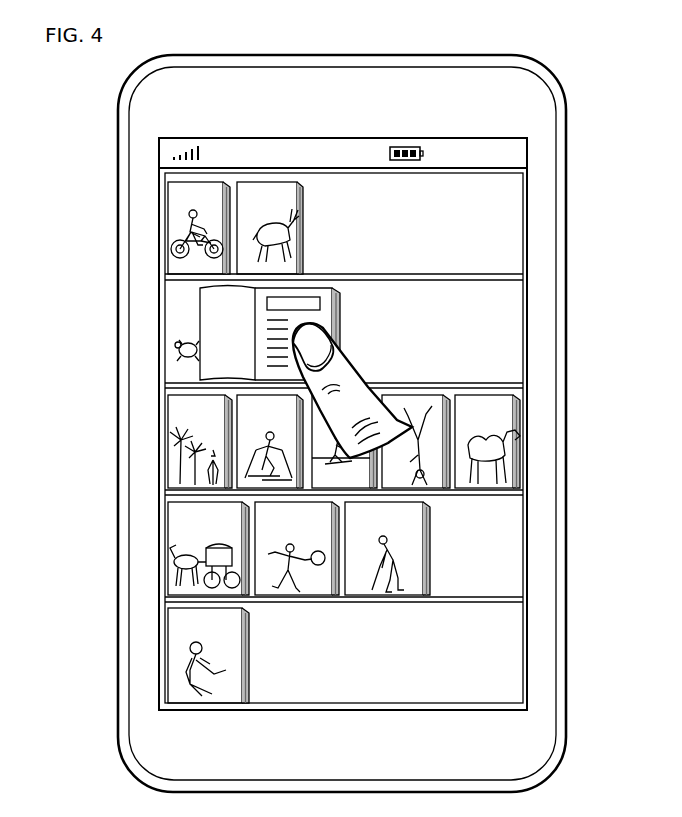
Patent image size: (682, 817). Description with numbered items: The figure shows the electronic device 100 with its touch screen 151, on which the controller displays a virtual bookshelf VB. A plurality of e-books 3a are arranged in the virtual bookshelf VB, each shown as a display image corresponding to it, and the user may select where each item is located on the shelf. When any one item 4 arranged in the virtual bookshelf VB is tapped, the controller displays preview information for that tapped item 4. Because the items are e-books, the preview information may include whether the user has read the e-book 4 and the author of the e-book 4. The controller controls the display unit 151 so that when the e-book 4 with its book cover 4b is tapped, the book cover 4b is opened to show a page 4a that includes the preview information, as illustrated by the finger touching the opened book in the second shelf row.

The electronic device 100 is at (566, 112).
The touch screen 151 is at (528, 150).
The virtual bookshelf VB is at (286, 438).
The e-book 3a is at (180, 219).
The tapped item 4 is at (201, 334).
The book cover 4b is at (218, 322).
The page including preview information 4a is at (277, 344).